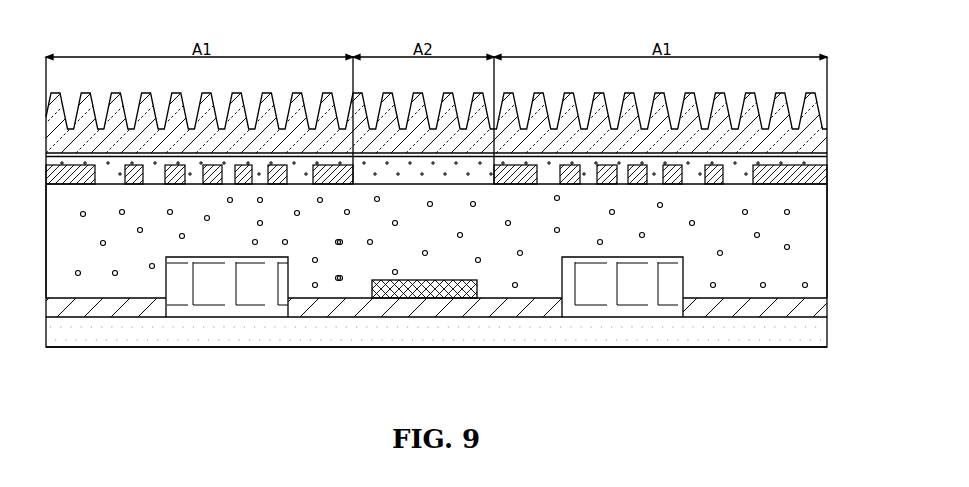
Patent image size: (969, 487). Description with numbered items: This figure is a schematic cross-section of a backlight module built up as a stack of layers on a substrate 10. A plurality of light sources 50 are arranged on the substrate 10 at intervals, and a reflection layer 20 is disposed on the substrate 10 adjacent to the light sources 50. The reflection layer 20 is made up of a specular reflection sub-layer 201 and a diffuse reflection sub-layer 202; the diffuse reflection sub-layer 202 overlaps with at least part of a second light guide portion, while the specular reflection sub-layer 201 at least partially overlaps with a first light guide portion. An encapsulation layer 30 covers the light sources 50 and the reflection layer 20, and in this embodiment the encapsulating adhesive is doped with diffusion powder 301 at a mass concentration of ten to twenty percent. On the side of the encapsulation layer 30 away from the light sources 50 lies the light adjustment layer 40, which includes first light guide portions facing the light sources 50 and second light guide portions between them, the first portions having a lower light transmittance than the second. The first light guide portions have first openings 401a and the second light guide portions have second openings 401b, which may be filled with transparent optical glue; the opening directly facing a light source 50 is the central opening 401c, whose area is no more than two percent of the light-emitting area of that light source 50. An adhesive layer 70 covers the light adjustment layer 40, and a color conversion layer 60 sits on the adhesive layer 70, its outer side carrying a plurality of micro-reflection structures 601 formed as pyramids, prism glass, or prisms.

The substrate 10 is at (828, 335).
The reflection layer 20 is at (828, 310).
The specular reflection sub-layer 201 is at (530, 305).
The diffuse reflection sub-layer 202 is at (424, 292).
The encapsulation layer 30 is at (828, 258).
The diffusion powder 301 is at (790, 249).
The light adjustment layer 40 is at (828, 177).
The first opening 401a is at (698, 173).
The second opening 401b is at (438, 167).
The central opening 401c is at (622, 170).
The light source 50 is at (630, 290).
The color conversion layer 60 is at (828, 142).
The micro-reflection structure 601 is at (812, 124).
The adhesive layer 70 is at (828, 156).